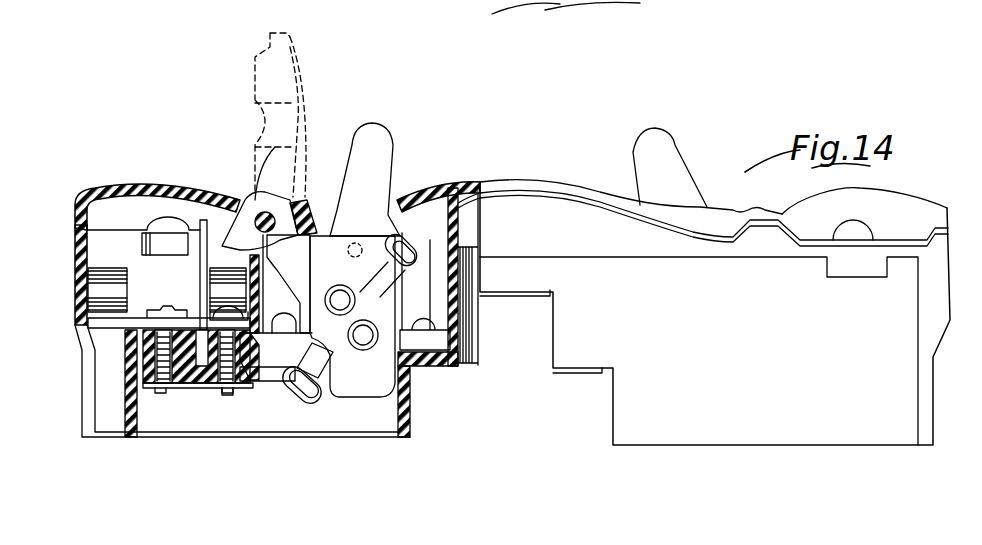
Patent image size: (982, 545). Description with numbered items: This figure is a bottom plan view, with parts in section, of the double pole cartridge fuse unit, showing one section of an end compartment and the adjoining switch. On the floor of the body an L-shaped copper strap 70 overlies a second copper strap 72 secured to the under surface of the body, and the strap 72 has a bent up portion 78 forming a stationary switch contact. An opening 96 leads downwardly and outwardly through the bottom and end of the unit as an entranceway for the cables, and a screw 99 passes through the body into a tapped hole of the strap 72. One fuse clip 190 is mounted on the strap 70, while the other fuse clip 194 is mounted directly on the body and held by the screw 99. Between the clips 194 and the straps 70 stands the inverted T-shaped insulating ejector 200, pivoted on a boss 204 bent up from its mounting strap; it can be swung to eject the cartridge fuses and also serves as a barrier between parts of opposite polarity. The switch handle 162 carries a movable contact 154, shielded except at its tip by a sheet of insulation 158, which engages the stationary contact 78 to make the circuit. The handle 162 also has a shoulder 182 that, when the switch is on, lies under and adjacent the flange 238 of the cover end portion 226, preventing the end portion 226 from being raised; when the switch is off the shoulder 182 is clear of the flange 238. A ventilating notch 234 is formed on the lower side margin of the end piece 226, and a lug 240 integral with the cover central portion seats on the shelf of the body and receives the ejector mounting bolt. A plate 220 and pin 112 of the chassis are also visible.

The L-shaped strap 70 is at (112, 327).
The second strap 72 is at (264, 381).
The bent up portion 78 is at (305, 362).
The opening 96 is at (277, 309).
The screw 99 is at (228, 390).
The pin 112 is at (393, 233).
The movable contact 154 is at (318, 358).
The sheet of insulation 158 is at (357, 316).
The handle 162 is at (518, 179).
The shoulder 182 is at (276, 284).
The fuse clip 190 is at (115, 285).
The fuse clip 194 is at (237, 275).
The ejector 200 is at (205, 284).
The boss 204 is at (203, 355).
The plate 220 is at (538, 180).
The end portion of the cover 226 is at (158, 183).
The ventilating notch 234 is at (855, 236).
The flange 238 is at (305, 200).
The lug 240 is at (228, 195).